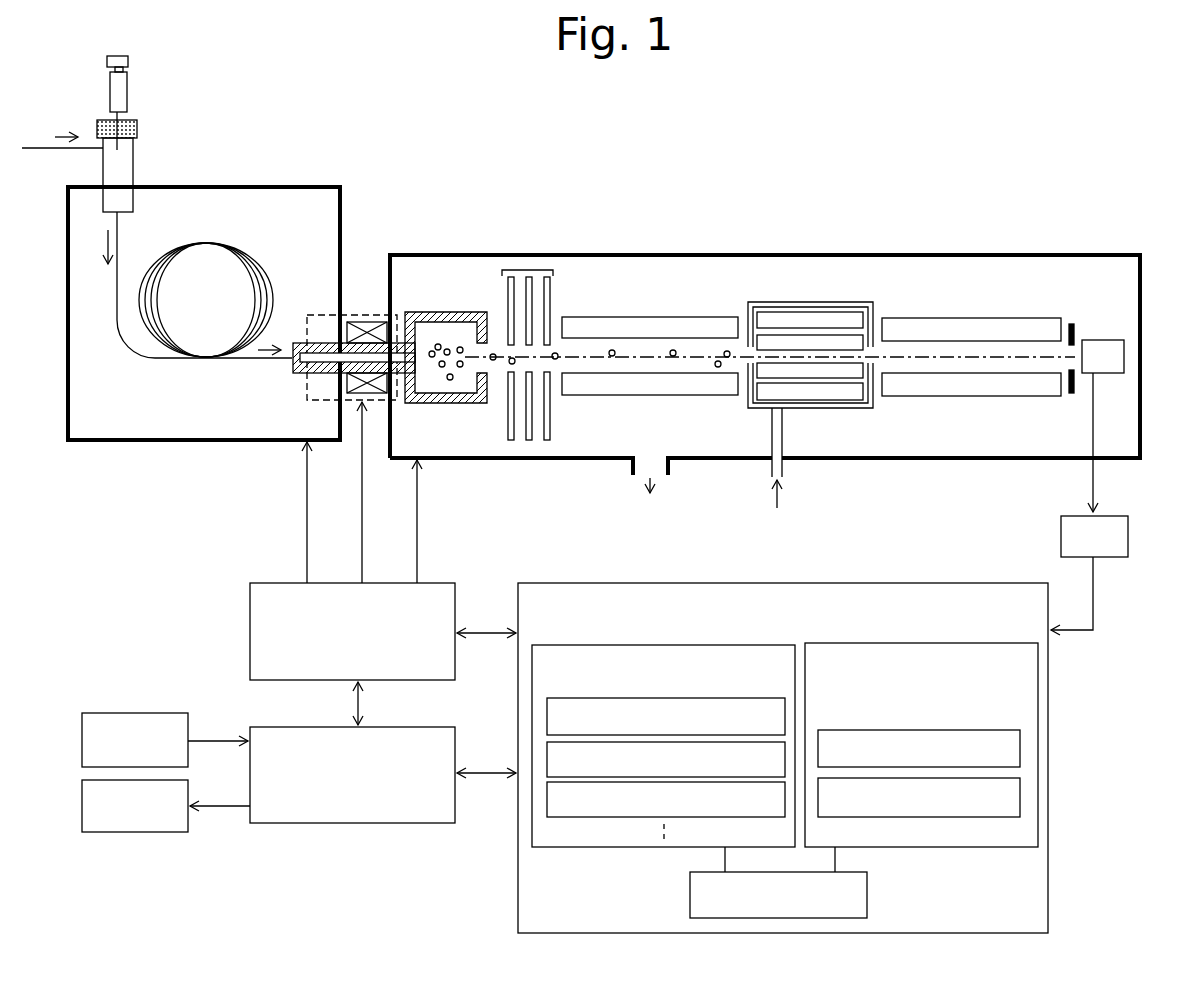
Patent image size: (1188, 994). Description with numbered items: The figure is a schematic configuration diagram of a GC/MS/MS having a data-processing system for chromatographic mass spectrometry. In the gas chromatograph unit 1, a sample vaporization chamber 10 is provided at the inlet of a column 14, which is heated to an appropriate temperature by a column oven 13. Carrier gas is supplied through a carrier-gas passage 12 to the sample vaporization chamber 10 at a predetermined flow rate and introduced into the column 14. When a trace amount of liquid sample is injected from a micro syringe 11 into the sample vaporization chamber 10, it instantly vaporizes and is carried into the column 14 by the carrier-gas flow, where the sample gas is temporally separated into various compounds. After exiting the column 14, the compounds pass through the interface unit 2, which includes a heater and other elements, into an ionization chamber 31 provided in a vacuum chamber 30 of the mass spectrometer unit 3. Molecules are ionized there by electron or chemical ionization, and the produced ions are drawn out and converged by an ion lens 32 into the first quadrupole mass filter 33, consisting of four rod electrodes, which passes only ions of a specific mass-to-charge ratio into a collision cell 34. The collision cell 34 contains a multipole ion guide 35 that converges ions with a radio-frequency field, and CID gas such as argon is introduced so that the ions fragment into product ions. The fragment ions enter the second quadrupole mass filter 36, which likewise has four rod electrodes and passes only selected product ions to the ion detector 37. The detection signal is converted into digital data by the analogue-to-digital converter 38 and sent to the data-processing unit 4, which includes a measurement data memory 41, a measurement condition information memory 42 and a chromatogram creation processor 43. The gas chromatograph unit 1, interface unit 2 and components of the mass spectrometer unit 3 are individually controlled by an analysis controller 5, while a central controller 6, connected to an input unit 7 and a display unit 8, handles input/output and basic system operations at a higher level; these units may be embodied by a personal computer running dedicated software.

The gas chromatograph unit 1 is at (282, 74).
The interface unit 2 is at (357, 313).
The mass spectrometer unit 3 is at (466, 160).
The data-processing unit 4 is at (905, 582).
The analysis controller 5 is at (250, 609).
The central controller 6 is at (412, 823).
The input unit 7 is at (82, 735).
The display unit 8 is at (82, 800).
The sample vaporization chamber 10 is at (137, 152).
The micro syringe 11 is at (130, 87).
The carrier-gas passage 12 is at (53, 152).
The column oven 13 is at (250, 185).
The column 14 is at (233, 248).
The vacuum chamber 30 is at (603, 255).
The ionization chamber 31 is at (462, 310).
The ion lens 32 is at (528, 268).
The first quadrupole mass filter 33 is at (657, 316).
The collision cell 34 is at (845, 302).
The multipole ion guide 35 is at (800, 311).
The second quadrupole mass filter 36 is at (985, 317).
The ion detector 37 is at (1098, 340).
The analogue-to-digital converter 38 is at (1130, 541).
The measurement data memory 41 is at (567, 644).
The measurement condition information memory 42 is at (990, 642).
The chromatogram creation processor 43 is at (868, 889).